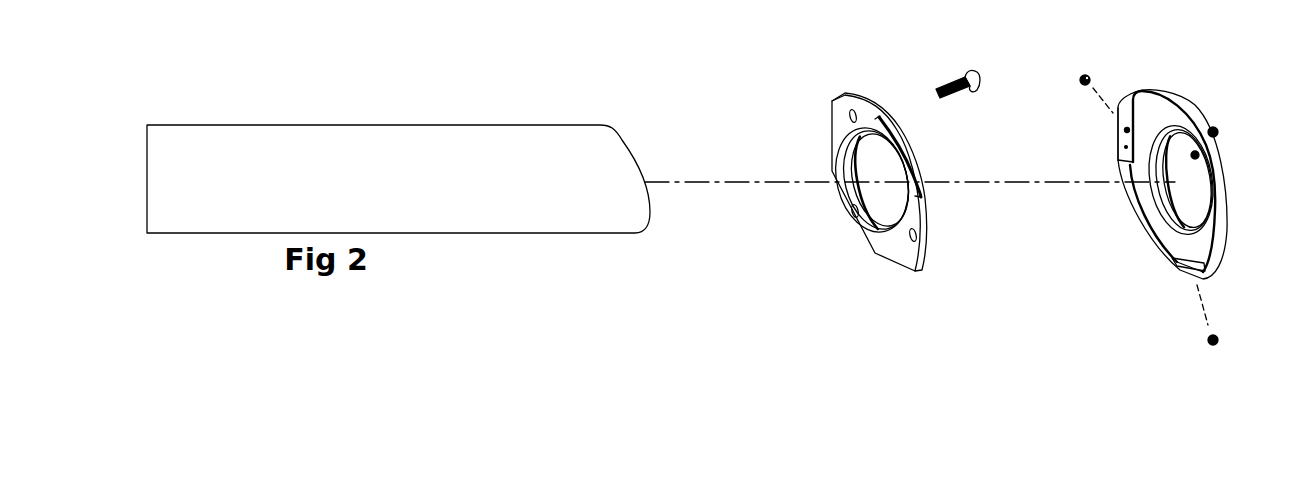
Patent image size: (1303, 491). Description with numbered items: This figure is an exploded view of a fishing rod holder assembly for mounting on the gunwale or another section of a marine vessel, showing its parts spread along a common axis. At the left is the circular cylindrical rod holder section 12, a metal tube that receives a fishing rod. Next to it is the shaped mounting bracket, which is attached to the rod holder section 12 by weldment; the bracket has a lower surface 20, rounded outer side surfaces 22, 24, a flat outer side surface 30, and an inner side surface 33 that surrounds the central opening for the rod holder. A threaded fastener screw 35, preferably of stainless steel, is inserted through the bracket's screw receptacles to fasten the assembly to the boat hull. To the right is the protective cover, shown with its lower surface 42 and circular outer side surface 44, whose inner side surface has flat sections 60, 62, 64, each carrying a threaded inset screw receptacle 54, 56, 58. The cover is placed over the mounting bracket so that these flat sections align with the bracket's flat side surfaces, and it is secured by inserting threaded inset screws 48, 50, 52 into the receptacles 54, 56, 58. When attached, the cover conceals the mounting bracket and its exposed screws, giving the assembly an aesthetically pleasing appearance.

The circular cylindrical rod holder section 12 is at (527, 212).
The lower surface 20 is at (842, 115).
The rounded outer side surface 22 is at (860, 103).
The rounded outer side surface 24 is at (927, 251).
The flat outer side surface 30 is at (900, 163).
The inner side surface 33 is at (858, 195).
The threaded fastener screw 35 is at (968, 73).
The lower surface 42 is at (1170, 239).
The circular outer side surface 44 is at (1218, 227).
The threaded inset screw 48 is at (1080, 78).
The threaded inset screw 50 is at (1222, 128).
The threaded inset screw 52 is at (1213, 347).
The threaded inset screw receptacle 54 is at (1124, 131).
The threaded inset screw receptacle 56 is at (1199, 155).
The threaded inset screw receptacle 58 is at (1195, 266).
The flat section 60 is at (1124, 148).
The flat section 62 is at (1183, 262).
The flat section 64 is at (1185, 150).